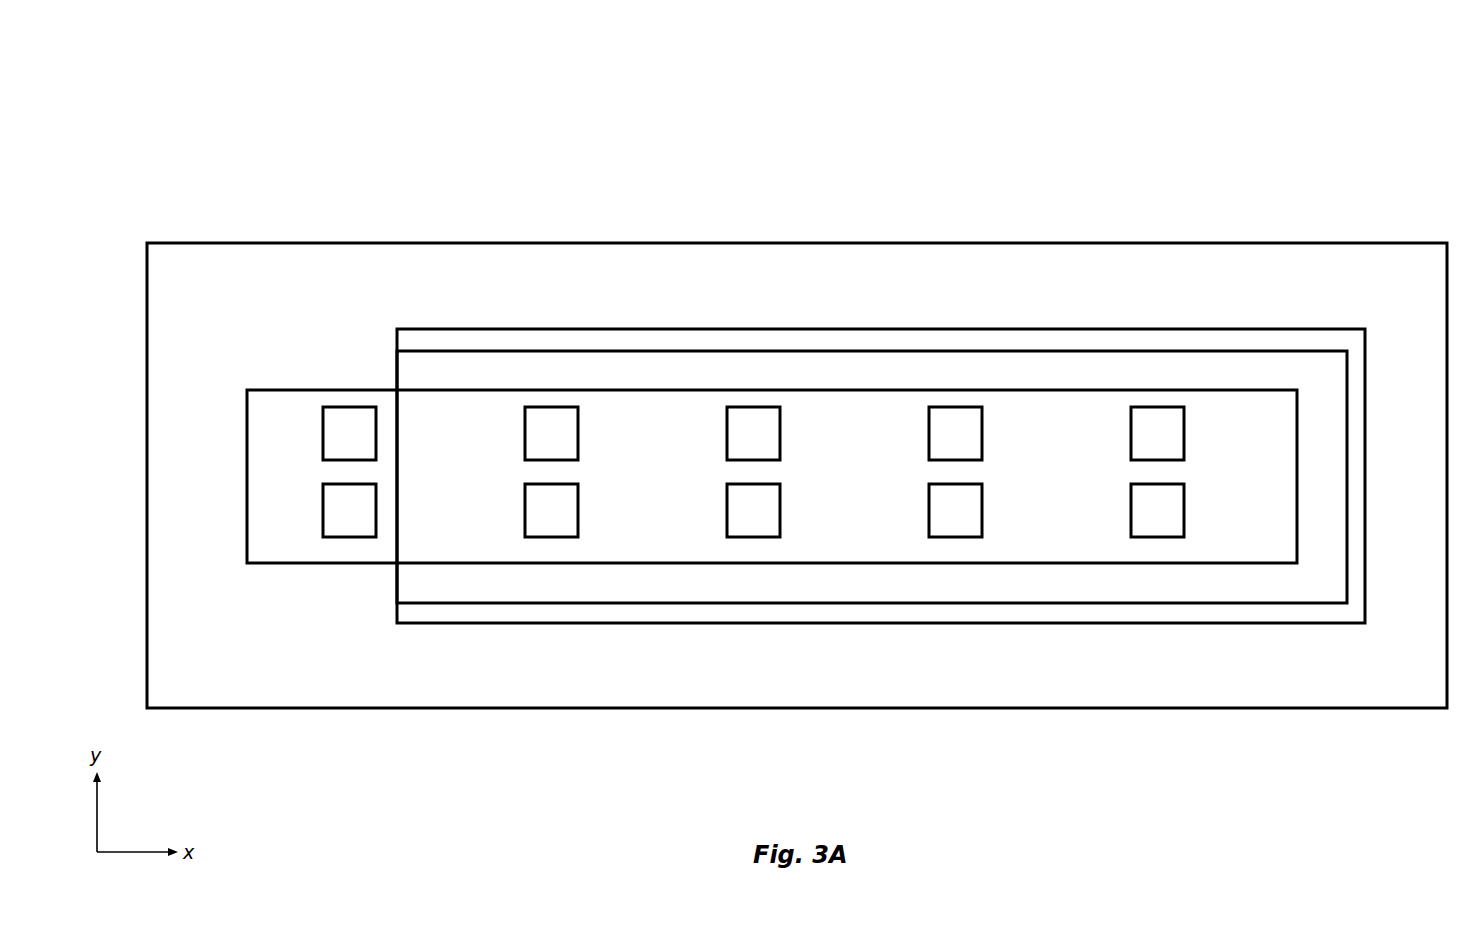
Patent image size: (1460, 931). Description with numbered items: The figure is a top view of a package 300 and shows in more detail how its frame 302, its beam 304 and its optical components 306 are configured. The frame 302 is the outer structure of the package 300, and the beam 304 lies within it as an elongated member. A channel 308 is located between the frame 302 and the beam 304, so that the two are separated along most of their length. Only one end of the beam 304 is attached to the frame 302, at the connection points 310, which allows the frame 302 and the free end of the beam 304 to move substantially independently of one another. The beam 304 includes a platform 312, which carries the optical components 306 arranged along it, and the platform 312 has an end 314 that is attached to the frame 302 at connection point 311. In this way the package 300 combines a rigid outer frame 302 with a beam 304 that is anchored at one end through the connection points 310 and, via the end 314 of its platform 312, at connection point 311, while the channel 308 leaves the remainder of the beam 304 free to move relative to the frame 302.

The package 300 is at (315, 158).
The frame 302 is at (893, 265).
The beam 304 is at (609, 367).
The optical components 306 is at (755, 530).
The channel 308 is at (1088, 340).
The connection points 310 is at (397, 372).
The connection point 311 is at (247, 430).
The platform 312 is at (630, 540).
The end 314 is at (293, 515).